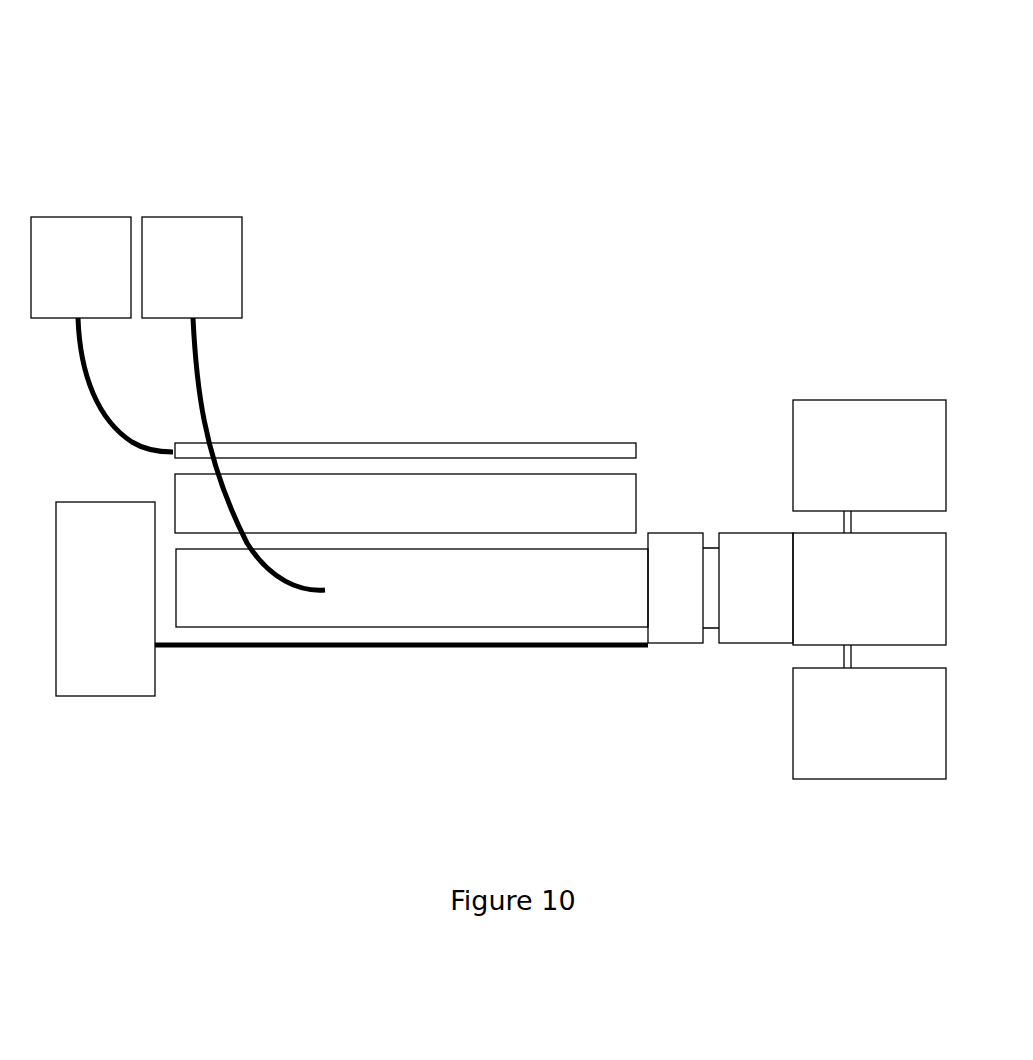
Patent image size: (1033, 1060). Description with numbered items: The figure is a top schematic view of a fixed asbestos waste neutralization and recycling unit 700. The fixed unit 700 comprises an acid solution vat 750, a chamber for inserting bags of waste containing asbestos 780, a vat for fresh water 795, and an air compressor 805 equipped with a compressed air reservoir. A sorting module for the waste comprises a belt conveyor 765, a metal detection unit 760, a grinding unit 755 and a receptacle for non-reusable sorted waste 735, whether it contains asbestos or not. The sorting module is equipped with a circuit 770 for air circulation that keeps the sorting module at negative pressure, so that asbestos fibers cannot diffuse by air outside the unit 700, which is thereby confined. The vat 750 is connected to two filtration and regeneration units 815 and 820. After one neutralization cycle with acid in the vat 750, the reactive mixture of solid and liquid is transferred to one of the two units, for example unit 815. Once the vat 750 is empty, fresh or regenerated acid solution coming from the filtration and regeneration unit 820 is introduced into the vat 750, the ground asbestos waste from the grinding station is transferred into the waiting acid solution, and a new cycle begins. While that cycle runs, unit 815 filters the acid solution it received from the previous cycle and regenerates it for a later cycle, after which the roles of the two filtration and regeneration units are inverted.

The fixed asbestos waste neutralization unit 700 is at (401, 115).
The air compressor 805 is at (80, 232).
The vat for fresh water 795 is at (195, 232).
The circuit for air circulation 770 is at (454, 448).
The receptacle for non-reusable sorted waste 735 is at (347, 492).
The belt conveyor 765 is at (230, 618).
The chamber for inserting bags of waste containing asbestos 780 is at (111, 687).
The metal detection unit 760 is at (675, 633).
The grinding unit 755 is at (747, 633).
The acid solution vat 750 is at (812, 547).
The filtration and regeneration unit 815 is at (870, 417).
The filtration and regeneration unit 820 is at (878, 763).